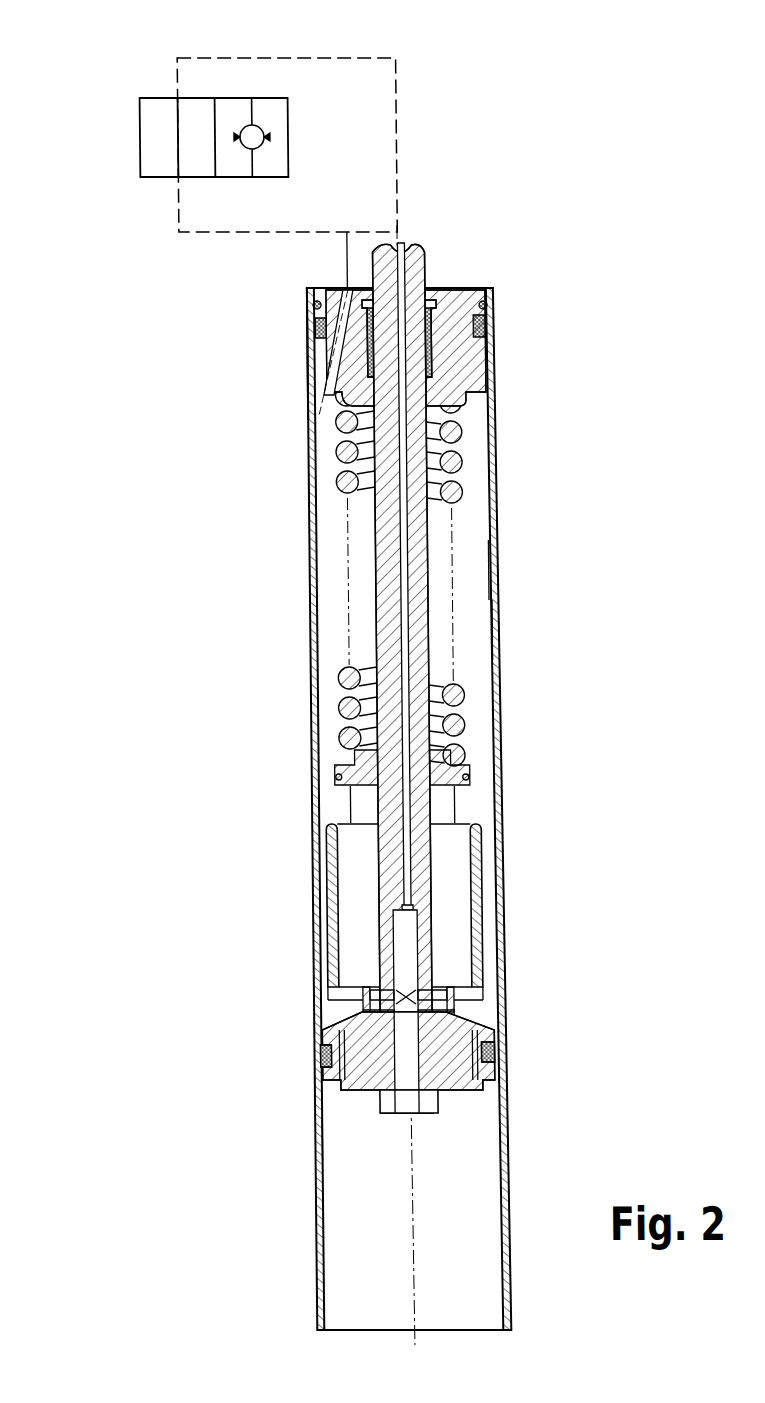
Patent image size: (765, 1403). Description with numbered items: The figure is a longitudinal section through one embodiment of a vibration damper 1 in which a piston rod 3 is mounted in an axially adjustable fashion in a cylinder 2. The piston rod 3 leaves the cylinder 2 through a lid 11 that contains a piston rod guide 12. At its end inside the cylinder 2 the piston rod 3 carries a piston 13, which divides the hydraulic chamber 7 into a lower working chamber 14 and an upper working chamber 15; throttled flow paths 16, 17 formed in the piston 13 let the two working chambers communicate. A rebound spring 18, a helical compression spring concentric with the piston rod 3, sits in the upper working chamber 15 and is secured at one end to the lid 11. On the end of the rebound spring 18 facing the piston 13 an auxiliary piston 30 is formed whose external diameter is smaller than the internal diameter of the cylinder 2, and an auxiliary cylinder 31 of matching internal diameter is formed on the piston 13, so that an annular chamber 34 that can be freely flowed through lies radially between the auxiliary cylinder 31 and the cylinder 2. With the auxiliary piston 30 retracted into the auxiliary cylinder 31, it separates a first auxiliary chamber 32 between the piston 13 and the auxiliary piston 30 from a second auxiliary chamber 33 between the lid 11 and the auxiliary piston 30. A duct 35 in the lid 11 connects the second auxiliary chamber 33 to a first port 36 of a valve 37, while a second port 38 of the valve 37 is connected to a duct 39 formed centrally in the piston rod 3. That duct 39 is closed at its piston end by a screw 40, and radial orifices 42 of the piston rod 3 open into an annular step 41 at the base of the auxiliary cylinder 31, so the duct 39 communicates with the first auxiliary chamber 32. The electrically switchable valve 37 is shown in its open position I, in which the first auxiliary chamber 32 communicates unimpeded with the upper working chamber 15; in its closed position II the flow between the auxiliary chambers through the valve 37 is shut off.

The vibration damper 1 is at (497, 283).
The cylinder 2 is at (490, 750).
The piston rod 3 is at (373, 532).
The hydraulic chamber 7 is at (340, 1172).
The lid 11 is at (484, 316).
The piston rod guide 12 is at (483, 360).
The piston 13 is at (312, 1070).
The lower working chamber 14 is at (449, 1142).
The upper working chamber 15 is at (462, 568).
The throttled flow path 16 is at (487, 1033).
The throttled flow path 17 is at (324, 1048).
The rebound spring 18 is at (333, 668).
The auxiliary piston 30 is at (329, 778).
The auxiliary cylinder 31 is at (324, 870).
The first auxiliary chamber 32 is at (443, 886).
The second auxiliary chamber 33 is at (471, 623).
The annular chamber 34 is at (477, 862).
The duct 35 is at (329, 372).
The first port 36 is at (176, 177).
The valve 37 is at (139, 135).
The second port 38 is at (177, 98).
The duct 39 is at (400, 276).
The screw 40 is at (414, 1118).
The annular step 41 is at (342, 1003).
The radial orifices 42 is at (362, 1000).
The open position I is at (146, 162).
The closed position II is at (273, 157).